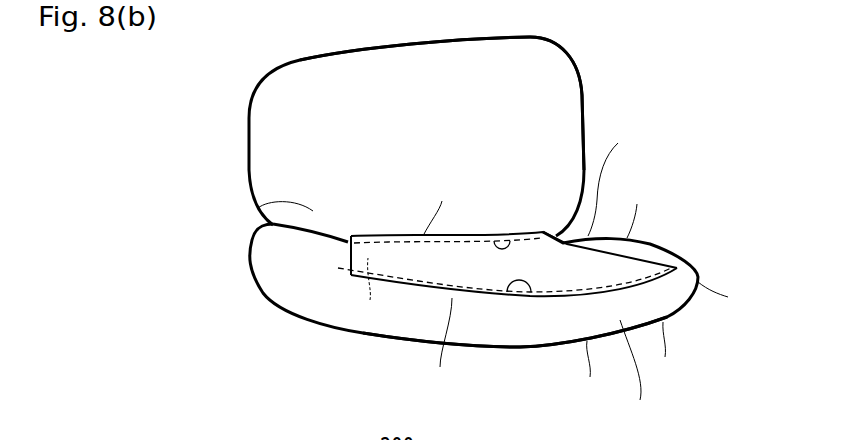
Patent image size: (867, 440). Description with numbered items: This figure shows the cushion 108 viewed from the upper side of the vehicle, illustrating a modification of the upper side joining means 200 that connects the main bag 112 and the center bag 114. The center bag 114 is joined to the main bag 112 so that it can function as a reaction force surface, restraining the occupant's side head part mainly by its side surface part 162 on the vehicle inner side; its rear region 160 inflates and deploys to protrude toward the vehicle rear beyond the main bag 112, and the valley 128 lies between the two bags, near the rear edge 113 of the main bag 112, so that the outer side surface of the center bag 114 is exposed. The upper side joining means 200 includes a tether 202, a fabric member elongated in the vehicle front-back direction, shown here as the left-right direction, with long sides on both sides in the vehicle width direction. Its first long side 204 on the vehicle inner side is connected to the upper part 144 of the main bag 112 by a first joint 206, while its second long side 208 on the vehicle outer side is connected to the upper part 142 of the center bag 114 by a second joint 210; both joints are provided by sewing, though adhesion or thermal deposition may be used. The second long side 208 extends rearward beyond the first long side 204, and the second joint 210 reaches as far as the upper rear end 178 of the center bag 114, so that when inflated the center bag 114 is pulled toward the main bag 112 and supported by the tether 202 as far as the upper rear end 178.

The cushion 108 is at (238, 78).
The main bag 112 is at (360, 72).
The rear edge 113 is at (583, 89).
The center bag 114 is at (515, 360).
The valley 128 is at (621, 182).
The upper part of the center bag 142 is at (638, 374).
The upper part of the main bag 144 is at (250, 210).
The rear region 160 is at (669, 352).
The side surface part 162 is at (634, 208).
The upper rear end 178 is at (734, 297).
The upper side joining means 200 is at (356, 234).
The tether 202 is at (370, 293).
The first long side 204 is at (441, 206).
The first joint 206 is at (506, 238).
The second long side 208 is at (443, 347).
The second joint 210 is at (531, 295).